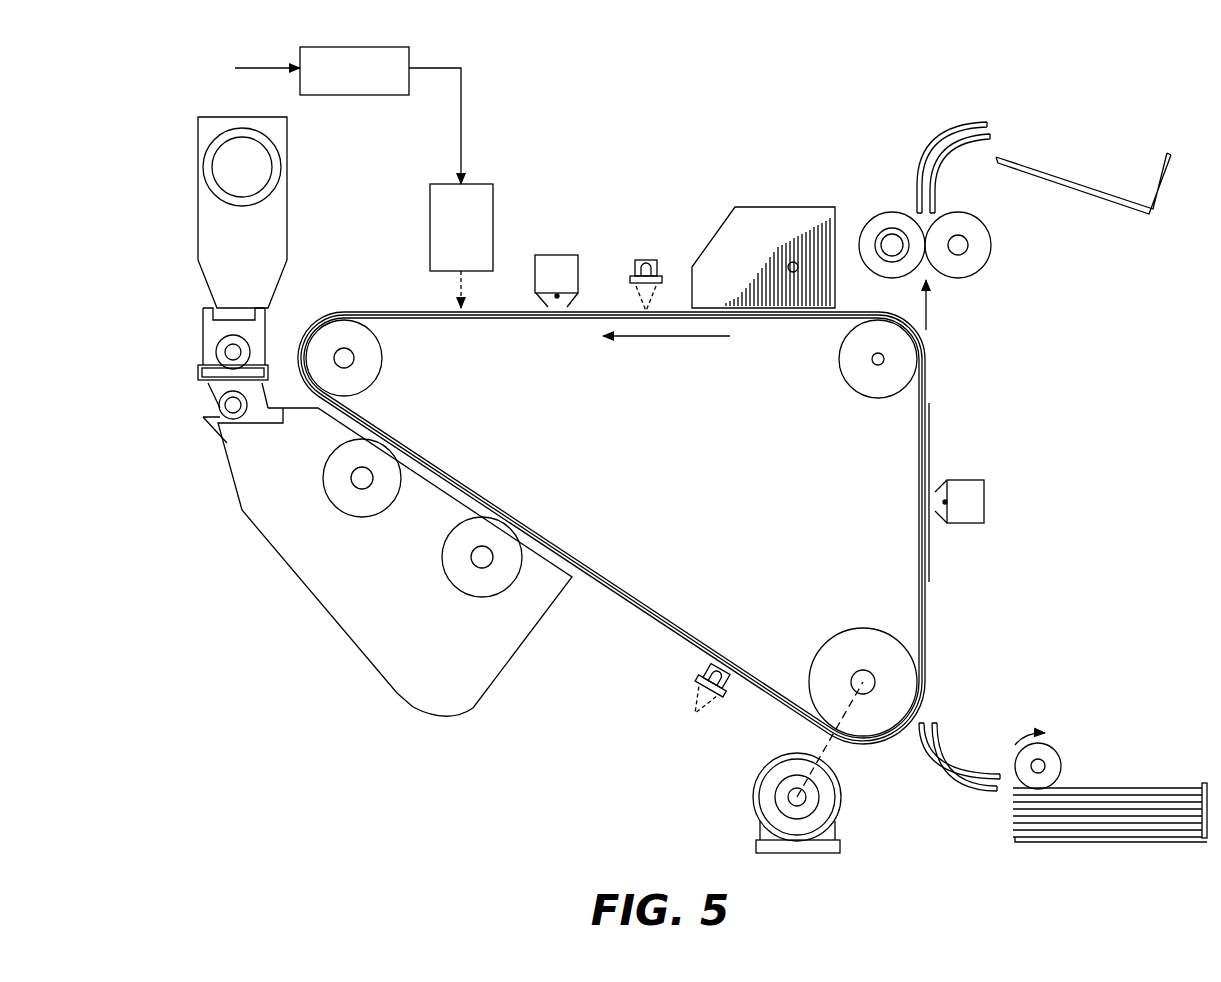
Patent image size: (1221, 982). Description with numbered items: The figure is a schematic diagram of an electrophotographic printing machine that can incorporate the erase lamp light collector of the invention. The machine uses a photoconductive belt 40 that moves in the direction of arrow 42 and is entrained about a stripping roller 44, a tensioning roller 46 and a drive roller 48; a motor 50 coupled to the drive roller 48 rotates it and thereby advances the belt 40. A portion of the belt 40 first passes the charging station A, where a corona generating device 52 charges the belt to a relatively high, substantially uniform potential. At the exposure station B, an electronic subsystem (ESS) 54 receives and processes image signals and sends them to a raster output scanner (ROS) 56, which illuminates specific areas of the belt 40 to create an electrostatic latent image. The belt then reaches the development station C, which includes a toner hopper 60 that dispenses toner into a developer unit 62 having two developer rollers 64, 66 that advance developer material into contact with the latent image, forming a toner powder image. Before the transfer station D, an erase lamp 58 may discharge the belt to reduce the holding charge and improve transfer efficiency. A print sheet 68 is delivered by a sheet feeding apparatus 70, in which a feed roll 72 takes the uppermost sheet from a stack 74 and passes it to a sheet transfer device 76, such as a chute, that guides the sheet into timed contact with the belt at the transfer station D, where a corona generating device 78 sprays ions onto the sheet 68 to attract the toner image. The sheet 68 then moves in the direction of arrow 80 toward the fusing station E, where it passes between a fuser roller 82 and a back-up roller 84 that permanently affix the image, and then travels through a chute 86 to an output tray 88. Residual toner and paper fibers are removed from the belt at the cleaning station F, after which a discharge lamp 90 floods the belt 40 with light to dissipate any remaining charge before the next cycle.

The photoconductive belt 40 is at (663, 620).
The arrow 42 is at (681, 338).
The stripping roller 44 is at (862, 385).
The tensioning roller 46 is at (382, 360).
The drive roller 48 is at (858, 642).
The motor 50 is at (728, 788).
The corona generating device 52 is at (563, 265).
The electronic subsystem (ESS) 54 is at (384, 108).
The raster output scanner (ROS) 56 is at (503, 193).
The erase lamp 58 is at (697, 716).
The toner hopper 60 is at (198, 211).
The developer unit 62 is at (279, 612).
The developer roller 64 is at (382, 457).
The developer roller 66 is at (497, 532).
The print sheet 68 is at (930, 545).
The sheet feeding apparatus 70 is at (1110, 795).
The feed roll 72 is at (1056, 753).
The stack 74 is at (1107, 825).
The sheet transfer device 76 is at (953, 763).
The corona generating device 78 is at (980, 498).
The arrow 80 is at (931, 306).
The fuser roller 82 is at (880, 228).
The back-up roller 84 is at (985, 237).
The chute 86 is at (926, 150).
The output tray 88 is at (1085, 188).
The discharge lamp 90 is at (663, 240).
The charging station A is at (590, 256).
The exposure station B is at (486, 293).
The development station C is at (315, 654).
The transfer station D is at (990, 455).
The fusing station E is at (883, 143).
The cleaning station F is at (832, 185).